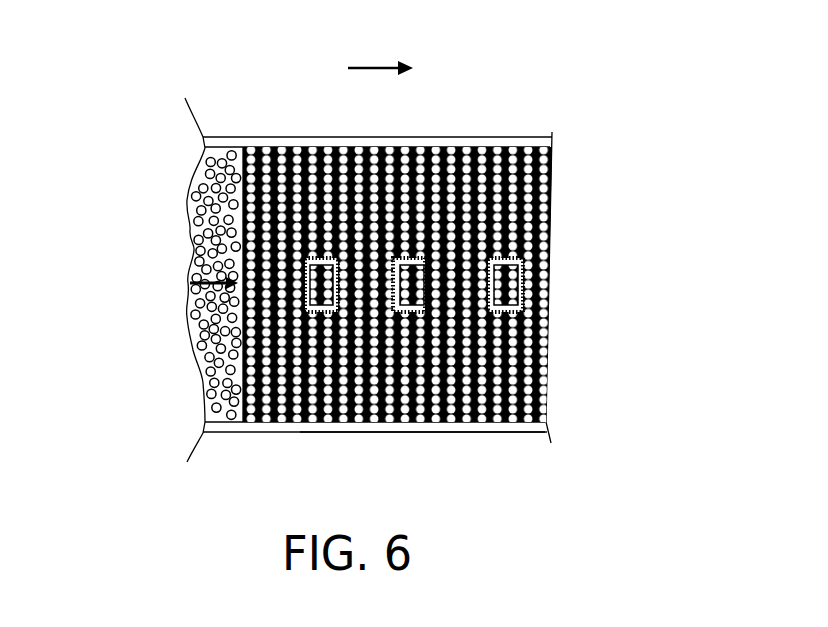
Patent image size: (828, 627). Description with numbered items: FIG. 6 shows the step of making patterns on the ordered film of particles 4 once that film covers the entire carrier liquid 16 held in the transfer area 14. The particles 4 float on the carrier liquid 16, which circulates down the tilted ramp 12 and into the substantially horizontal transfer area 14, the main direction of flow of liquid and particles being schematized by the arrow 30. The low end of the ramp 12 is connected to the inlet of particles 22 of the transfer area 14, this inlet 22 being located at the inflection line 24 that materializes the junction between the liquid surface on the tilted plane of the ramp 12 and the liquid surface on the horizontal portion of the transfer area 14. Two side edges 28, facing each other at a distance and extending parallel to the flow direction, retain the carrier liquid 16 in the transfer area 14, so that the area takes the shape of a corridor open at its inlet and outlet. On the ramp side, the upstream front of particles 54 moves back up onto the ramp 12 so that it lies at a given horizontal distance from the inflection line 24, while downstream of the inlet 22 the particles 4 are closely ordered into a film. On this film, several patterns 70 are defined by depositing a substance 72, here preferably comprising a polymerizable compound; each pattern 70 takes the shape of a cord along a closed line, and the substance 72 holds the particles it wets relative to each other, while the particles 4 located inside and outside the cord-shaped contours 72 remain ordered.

The particles 4 is at (183, 190).
The tilted ramp 12 is at (221, 452).
The transfer area 14 is at (425, 442).
The carrier liquid 16 is at (380, 422).
The inlet of particles 22 is at (295, 425).
The inflection line 24 is at (290, 148).
The side edges 28 is at (539, 137).
The arrow 30 is at (376, 66).
The upstream front of particles 54 is at (198, 360).
The patterns 70 is at (320, 252).
The deposited substance 72 is at (475, 210).